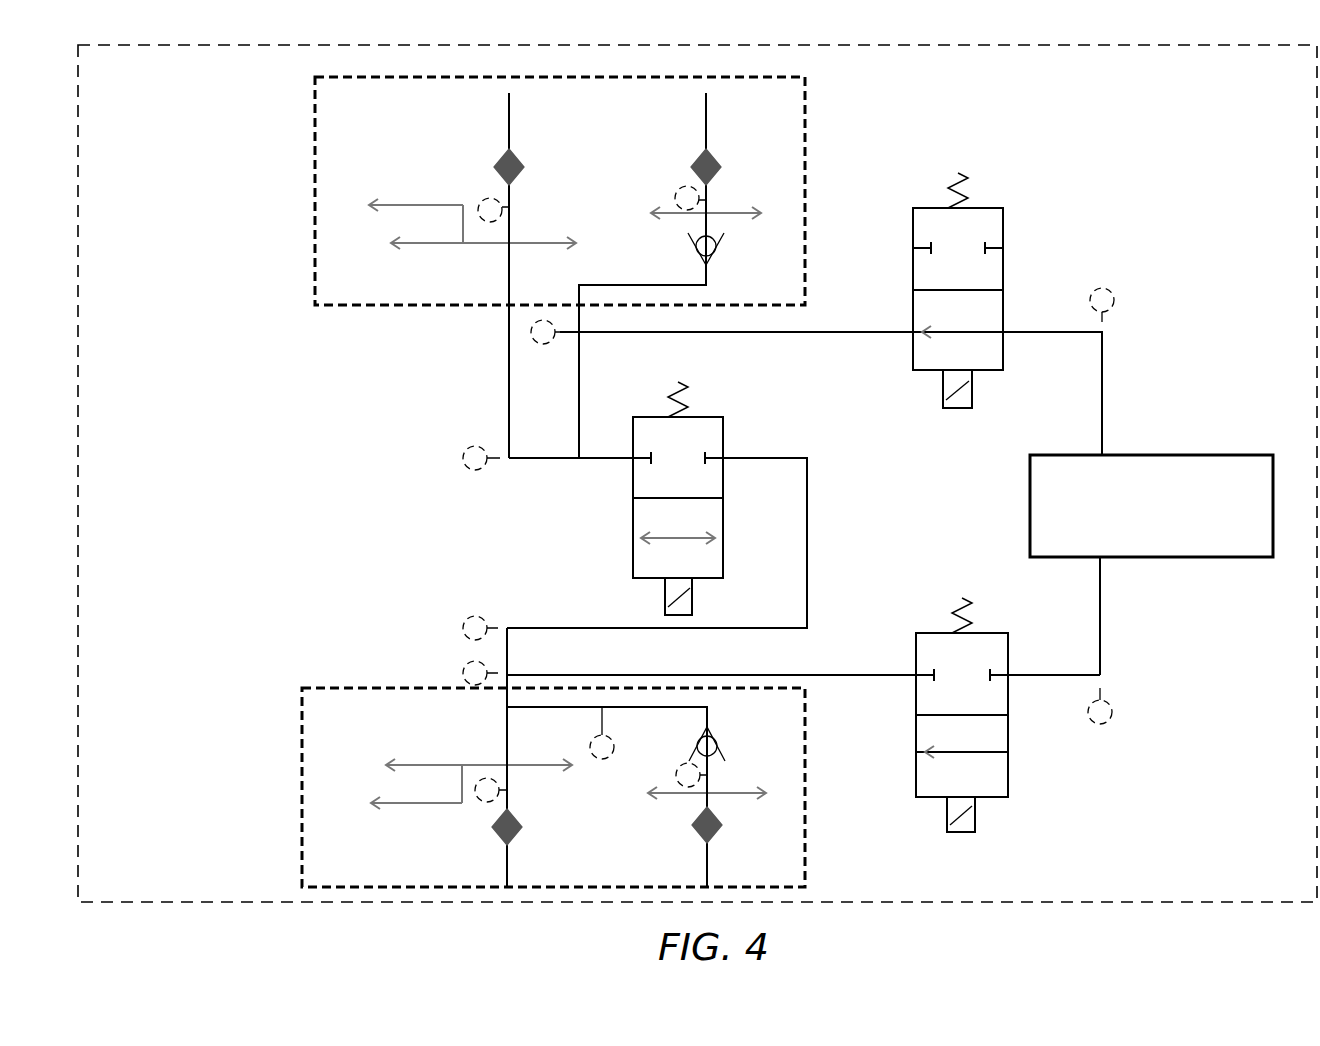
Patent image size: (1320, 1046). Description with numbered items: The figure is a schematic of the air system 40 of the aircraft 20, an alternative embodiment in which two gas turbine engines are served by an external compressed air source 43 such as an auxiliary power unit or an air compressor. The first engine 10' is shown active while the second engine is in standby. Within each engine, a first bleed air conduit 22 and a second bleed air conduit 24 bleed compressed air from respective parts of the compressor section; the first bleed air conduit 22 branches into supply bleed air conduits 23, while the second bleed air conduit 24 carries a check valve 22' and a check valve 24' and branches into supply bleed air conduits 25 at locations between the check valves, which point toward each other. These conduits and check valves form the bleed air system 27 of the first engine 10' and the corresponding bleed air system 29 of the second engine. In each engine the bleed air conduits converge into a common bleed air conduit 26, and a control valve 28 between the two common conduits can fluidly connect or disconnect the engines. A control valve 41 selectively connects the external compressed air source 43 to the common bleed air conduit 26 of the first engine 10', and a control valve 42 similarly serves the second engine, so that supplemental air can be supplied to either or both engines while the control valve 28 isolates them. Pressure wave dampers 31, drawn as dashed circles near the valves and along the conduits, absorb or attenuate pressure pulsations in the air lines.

The aircraft 20 is at (1299, 77).
The air system 40 is at (205, 245).
The bleed air system 27 is at (432, 622).
The bleed air system 29 is at (441, 487).
The first engine 10' is at (553, 787).
The first bleed air conduit 22 is at (546, 490).
The check valve 22' is at (542, 497).
The supply bleed air conduits 23 is at (507, 244).
The second bleed air conduit 24 is at (643, 490).
The check valve 24' is at (739, 496).
The supply bleed air conduits 25 is at (704, 213).
The common bleed air conduit 26 is at (605, 460).
The control valve 28 is at (725, 417).
The pressure wave damper 31 is at (478, 205).
The control valve 41 is at (1008, 645).
The control valve 42 is at (1003, 232).
The external compressed air source 43 is at (1145, 455).